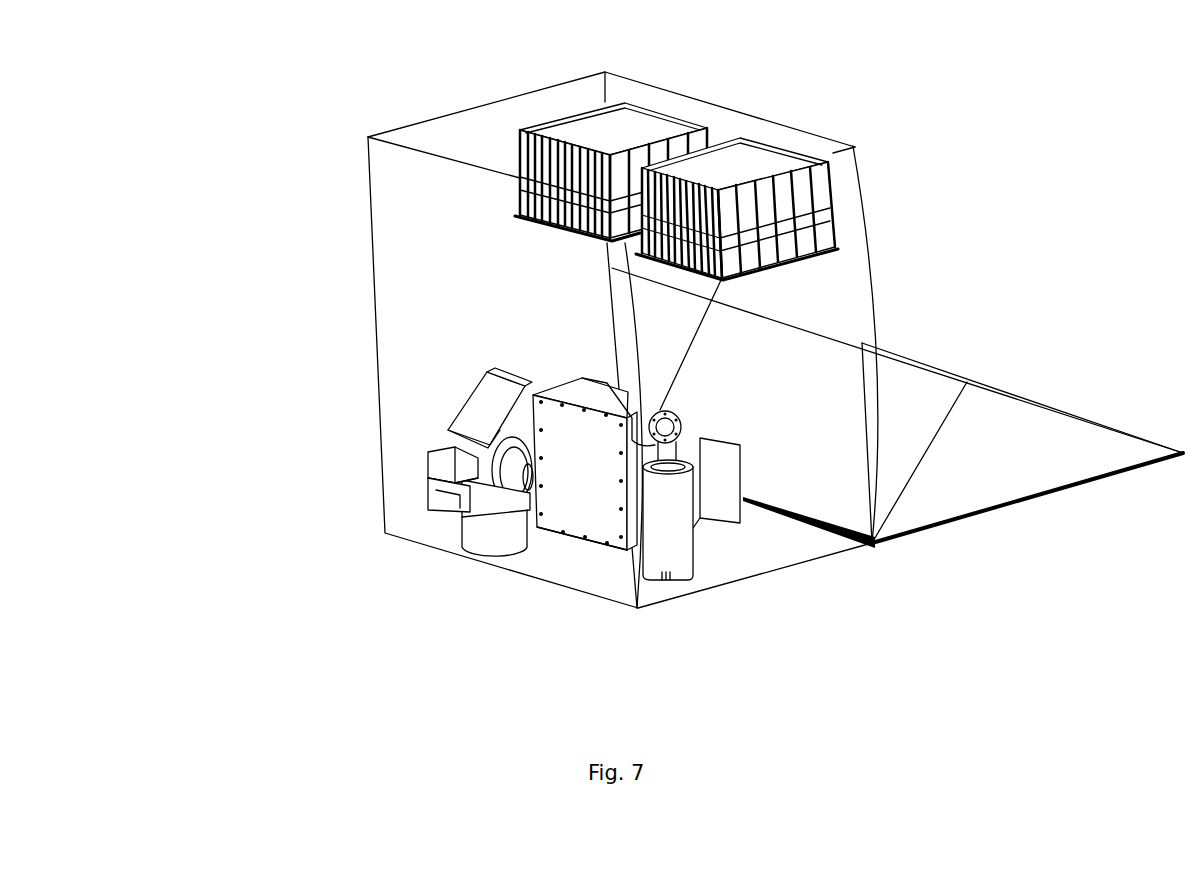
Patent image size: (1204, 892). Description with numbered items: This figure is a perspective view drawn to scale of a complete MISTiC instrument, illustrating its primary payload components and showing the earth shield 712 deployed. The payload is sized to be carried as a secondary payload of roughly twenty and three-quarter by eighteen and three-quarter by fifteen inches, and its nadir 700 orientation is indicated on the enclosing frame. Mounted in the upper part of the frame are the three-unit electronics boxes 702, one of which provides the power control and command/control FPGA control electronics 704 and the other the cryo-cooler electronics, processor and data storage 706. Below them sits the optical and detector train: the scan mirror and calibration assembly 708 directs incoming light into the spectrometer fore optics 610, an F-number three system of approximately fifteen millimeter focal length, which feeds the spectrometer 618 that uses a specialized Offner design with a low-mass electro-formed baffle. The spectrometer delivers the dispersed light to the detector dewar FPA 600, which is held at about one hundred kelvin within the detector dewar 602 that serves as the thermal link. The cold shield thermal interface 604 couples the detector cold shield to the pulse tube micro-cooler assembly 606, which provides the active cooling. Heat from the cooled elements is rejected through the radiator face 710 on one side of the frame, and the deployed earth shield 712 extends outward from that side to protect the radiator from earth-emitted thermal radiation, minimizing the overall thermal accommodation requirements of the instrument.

The detector dewar FPA 600 is at (568, 457).
The detector dewar 602 is at (528, 408).
The cold shield thermal interface 604 is at (683, 418).
The pulse tube micro-cooler assembly 606 is at (675, 497).
The spectrometer fore optics 610 is at (448, 430).
The spectrometer 618 is at (617, 530).
The nadir 700 is at (380, 447).
The 3U electronics boxes 702 is at (520, 173).
The power control and command/control FPGA control electronics 704 is at (562, 142).
The cryo-cooler electronics, processor and data storage 706 is at (793, 205).
The scan mirror and calibration assembly 708 is at (450, 498).
The radiator face 710 is at (863, 275).
The earth shield 712 is at (960, 473).